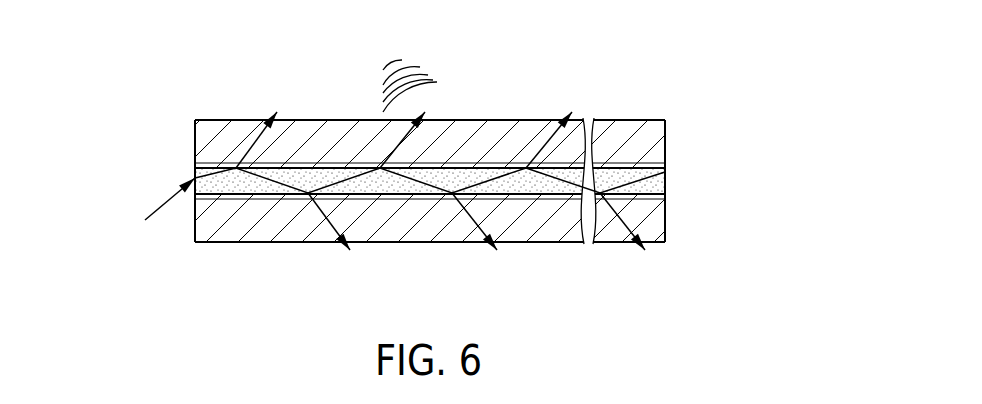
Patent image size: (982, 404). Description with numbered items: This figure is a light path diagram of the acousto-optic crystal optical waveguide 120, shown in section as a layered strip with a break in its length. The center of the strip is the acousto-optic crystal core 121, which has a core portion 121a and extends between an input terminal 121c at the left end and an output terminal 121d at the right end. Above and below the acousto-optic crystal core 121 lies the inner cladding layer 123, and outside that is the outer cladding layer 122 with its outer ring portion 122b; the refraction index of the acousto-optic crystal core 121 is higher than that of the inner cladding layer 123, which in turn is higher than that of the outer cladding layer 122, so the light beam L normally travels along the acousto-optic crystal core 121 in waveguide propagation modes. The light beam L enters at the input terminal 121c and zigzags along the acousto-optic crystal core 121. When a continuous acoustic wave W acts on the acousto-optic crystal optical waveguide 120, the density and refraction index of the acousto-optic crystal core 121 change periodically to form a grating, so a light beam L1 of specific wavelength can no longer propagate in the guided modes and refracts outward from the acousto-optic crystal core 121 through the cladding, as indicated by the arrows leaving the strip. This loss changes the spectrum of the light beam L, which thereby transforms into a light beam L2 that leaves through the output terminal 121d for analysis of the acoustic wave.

The acousto-optic crystal optical waveguide 120 is at (428, 149).
The acousto-optic crystal core 121 is at (252, 186).
The core portion 121a is at (668, 186).
The input terminal 121c is at (195, 178).
The output terminal 121d is at (668, 178).
The outer cladding layer 122 is at (555, 223).
The outer ring portion 122b is at (338, 136).
The inner cladding layer 123 is at (480, 166).
The light beam L is at (155, 216).
The light beam L1 is at (236, 166).
The light beam L2 is at (410, 182).
The continuous acoustic wave W is at (425, 78).